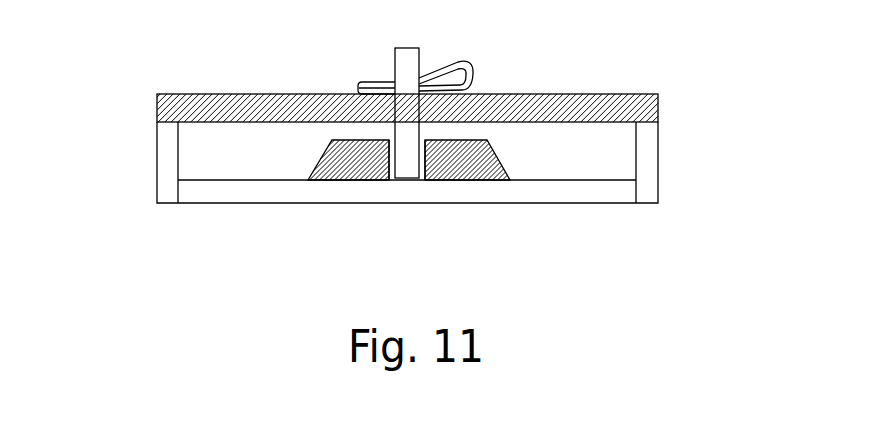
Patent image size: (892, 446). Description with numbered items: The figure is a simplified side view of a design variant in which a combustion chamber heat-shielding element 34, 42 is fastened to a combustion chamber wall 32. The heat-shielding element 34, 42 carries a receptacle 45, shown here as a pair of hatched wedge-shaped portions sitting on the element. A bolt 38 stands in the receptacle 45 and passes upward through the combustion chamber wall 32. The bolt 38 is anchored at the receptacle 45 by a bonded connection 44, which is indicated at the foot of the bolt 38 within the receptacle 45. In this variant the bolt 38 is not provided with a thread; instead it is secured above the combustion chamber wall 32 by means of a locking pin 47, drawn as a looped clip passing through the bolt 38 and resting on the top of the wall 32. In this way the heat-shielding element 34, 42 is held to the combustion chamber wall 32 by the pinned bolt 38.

The combustion chamber wall 32 is at (168, 107).
The combustion chamber heat-shielding element 42 is at (648, 157).
The combustion chamber heat-shielding element 34 is at (388, 195).
The bolt 38 is at (401, 127).
The bonded connection 44 is at (431, 163).
The receptacle 45 is at (478, 168).
The locking pin 47 is at (458, 78).